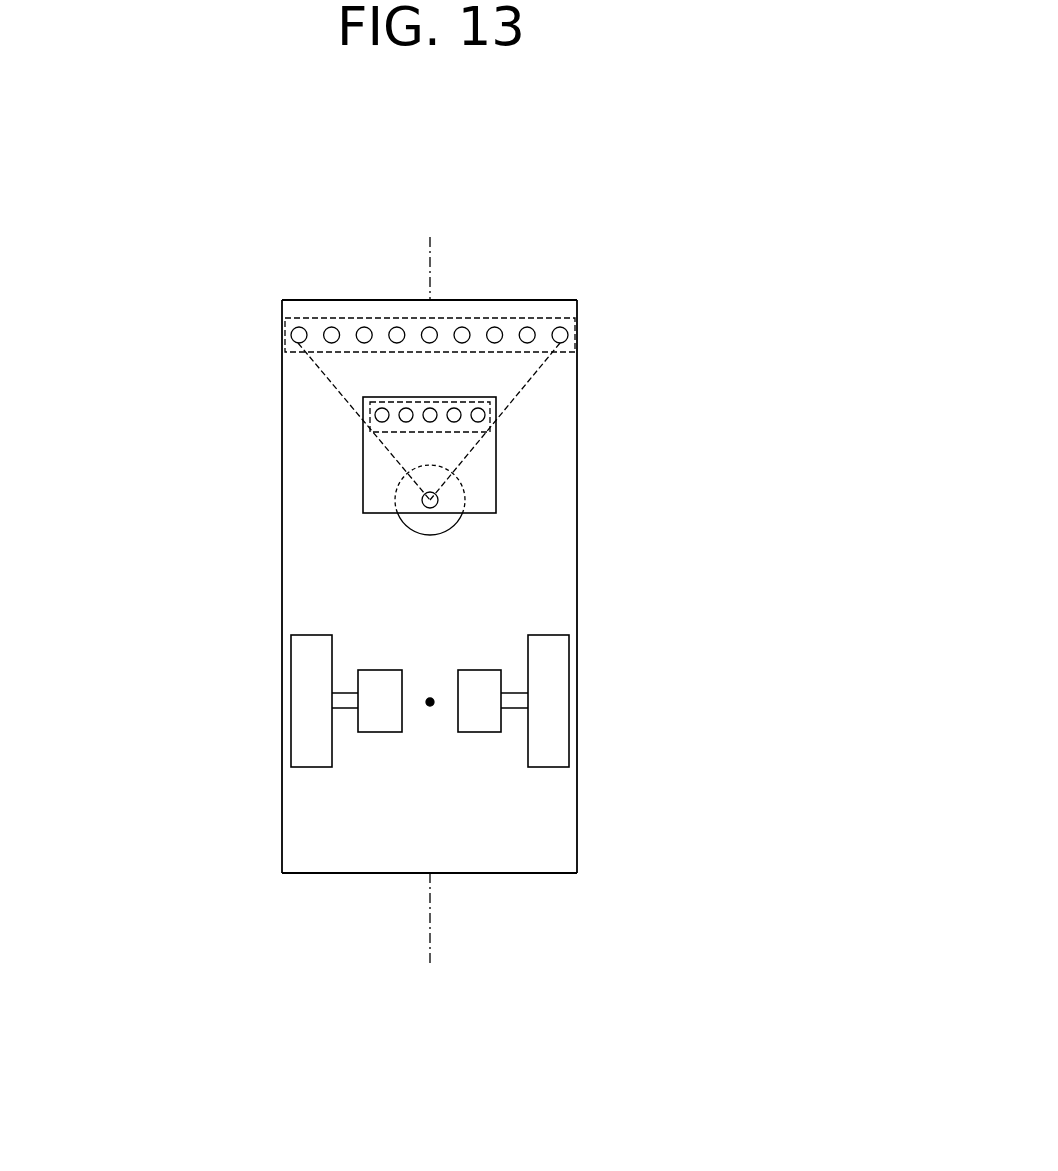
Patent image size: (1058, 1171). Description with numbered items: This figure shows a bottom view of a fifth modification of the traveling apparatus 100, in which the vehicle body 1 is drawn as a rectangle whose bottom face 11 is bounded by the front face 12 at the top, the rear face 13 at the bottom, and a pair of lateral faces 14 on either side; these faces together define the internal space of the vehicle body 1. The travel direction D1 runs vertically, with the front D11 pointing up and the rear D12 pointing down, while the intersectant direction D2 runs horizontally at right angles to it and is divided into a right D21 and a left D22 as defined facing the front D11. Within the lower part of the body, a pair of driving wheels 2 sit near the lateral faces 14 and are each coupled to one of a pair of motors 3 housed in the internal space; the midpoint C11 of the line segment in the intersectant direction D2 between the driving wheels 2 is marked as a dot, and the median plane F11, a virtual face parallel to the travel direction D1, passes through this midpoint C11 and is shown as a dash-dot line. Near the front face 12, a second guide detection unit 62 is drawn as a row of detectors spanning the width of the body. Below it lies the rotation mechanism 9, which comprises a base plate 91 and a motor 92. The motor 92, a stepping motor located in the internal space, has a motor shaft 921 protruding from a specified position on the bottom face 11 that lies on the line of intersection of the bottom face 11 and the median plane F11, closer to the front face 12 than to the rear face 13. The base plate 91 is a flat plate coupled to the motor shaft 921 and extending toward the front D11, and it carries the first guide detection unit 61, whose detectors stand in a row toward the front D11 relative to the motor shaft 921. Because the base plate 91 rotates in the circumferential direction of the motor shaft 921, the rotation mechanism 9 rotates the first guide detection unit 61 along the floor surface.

The traveling apparatus 100 is at (311, 265).
The vehicle body 1 is at (113, 827).
The bottom face 11 is at (298, 850).
The front face 12 is at (283, 301).
The rear face 13 is at (348, 873).
The lateral faces 14 is at (282, 830).
The driving wheels 2 is at (291, 732).
The motors 3 is at (368, 733).
The rotation mechanism 9 is at (651, 470).
The base plate 91 is at (496, 475).
The motor 92 is at (455, 525).
The motor shaft 921 is at (438, 500).
The first guide detection unit 61 is at (496, 447).
The second guide detection unit 62 is at (577, 340).
The midpoint C11 is at (430, 706).
The median plane F11 is at (430, 255).
The travel direction D1 is at (820, 433).
The front D11 is at (728, 483).
The rear D12 is at (728, 510).
The intersectant direction D2 is at (553, 130).
The right D21 is at (526, 186).
The left D22 is at (365, 188).